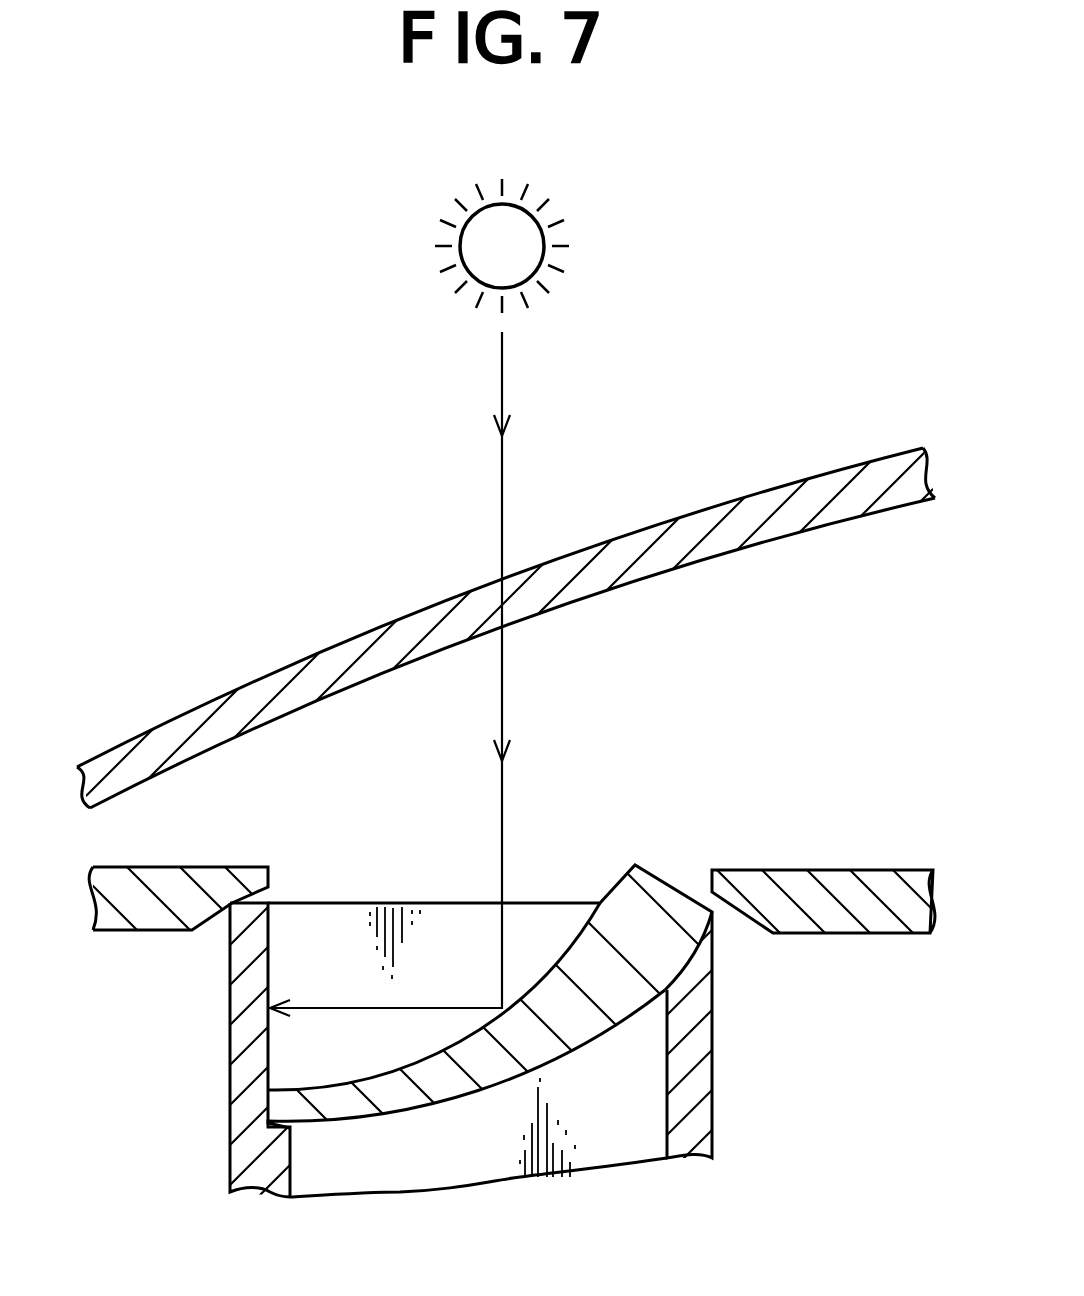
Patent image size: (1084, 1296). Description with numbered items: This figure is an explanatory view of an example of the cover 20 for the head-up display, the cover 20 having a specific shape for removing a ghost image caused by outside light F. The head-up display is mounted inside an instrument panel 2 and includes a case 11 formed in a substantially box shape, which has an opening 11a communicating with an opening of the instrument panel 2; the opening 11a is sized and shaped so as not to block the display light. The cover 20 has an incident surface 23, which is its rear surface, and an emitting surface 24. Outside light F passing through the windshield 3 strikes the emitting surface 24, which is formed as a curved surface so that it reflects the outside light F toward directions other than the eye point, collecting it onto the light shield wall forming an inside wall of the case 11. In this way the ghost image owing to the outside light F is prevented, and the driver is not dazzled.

The outside light F is at (500, 486).
The windshield 3 is at (636, 531).
The instrument panel 2 is at (142, 912).
The case 11 is at (230, 1078).
The opening 11a is at (595, 1108).
The cover 20 is at (672, 860).
The emitting surface 24 is at (577, 926).
The incident surface 23 is at (478, 1100).